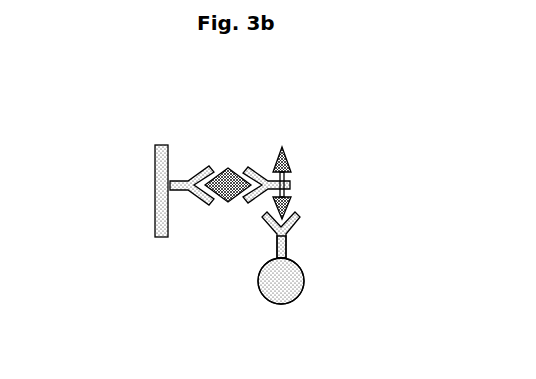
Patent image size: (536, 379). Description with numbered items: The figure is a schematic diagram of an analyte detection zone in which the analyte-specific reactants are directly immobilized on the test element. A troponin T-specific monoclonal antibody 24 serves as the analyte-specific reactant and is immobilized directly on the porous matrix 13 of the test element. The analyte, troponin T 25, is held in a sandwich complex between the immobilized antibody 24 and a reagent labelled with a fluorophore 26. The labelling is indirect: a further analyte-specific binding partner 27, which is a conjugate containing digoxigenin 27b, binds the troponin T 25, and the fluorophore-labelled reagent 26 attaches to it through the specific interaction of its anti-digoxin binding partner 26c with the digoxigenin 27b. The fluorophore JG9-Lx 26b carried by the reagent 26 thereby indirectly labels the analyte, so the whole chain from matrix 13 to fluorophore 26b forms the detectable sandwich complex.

The porous matrix 13 is at (160, 160).
The troponin T-specific monoclonal antibody (MAB TnT ) 24 is at (187, 181).
The troponin T 25 is at (232, 168).
The analyte-specific binding partner 27 is at (290, 183).
The digoxigenin 27b is at (289, 212).
The anti-digoxin binding partner 26c is at (295, 228).
The reagent labelled with a fluorophore 26 is at (292, 250).
The JG9-Lx 26b is at (298, 288).